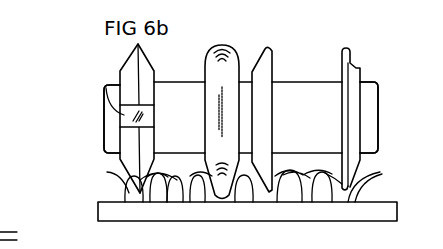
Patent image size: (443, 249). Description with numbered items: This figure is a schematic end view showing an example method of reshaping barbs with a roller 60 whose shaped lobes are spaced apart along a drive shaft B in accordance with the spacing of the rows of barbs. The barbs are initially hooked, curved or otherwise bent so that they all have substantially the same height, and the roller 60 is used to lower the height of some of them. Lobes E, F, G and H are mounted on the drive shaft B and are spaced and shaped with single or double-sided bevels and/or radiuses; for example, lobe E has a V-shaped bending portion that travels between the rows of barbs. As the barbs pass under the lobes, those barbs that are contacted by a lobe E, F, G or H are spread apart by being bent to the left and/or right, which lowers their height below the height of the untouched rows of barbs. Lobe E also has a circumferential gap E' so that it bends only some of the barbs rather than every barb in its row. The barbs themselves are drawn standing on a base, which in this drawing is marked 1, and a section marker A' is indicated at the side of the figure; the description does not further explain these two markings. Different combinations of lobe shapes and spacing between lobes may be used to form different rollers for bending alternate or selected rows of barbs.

The roller 60 is at (102, 119).
The circumferential gap E' is at (108, 100).
The lobe E is at (152, 114).
The lobe F is at (229, 52).
The lobe G is at (268, 74).
The drive shaft B is at (299, 82).
The lobe H is at (355, 65).
The base plate 1 is at (352, 220).
The section line A' is at (15, 235).